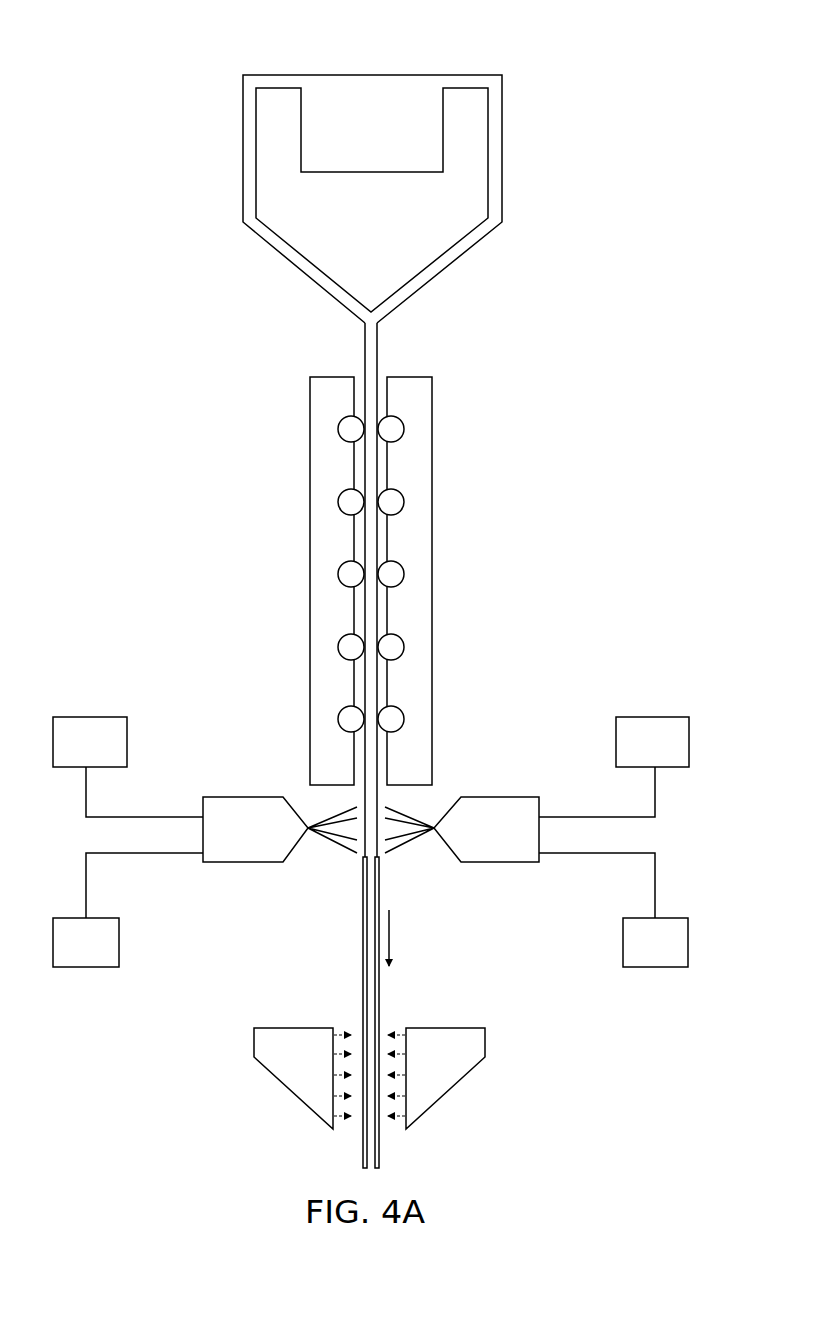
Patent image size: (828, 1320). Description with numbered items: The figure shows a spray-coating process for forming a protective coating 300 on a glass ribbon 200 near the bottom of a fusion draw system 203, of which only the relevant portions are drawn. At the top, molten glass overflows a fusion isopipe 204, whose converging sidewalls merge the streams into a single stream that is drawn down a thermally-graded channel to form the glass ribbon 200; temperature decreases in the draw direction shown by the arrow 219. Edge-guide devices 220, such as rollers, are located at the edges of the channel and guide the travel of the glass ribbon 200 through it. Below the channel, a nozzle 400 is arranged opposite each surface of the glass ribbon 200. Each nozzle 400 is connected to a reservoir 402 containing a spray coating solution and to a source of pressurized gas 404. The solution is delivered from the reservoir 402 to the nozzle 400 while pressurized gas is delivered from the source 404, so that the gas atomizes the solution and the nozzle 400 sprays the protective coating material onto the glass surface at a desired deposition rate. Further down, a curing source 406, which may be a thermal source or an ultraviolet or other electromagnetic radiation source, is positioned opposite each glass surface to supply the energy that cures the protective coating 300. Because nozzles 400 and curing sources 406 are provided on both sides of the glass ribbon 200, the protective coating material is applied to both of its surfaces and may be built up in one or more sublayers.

The fusion draw system 203 is at (373, 56).
The fusion isopipe 204 is at (489, 113).
The glass ribbon 200 is at (372, 606).
The edge-guide devices 220 is at (395, 427).
The nozzle 400 is at (245, 803).
The source of pressurized gas 404 is at (93, 725).
The reservoir 402 is at (89, 955).
The arrow 219 is at (410, 938).
The protective coating 300 is at (364, 995).
The curing source 406 is at (288, 1073).